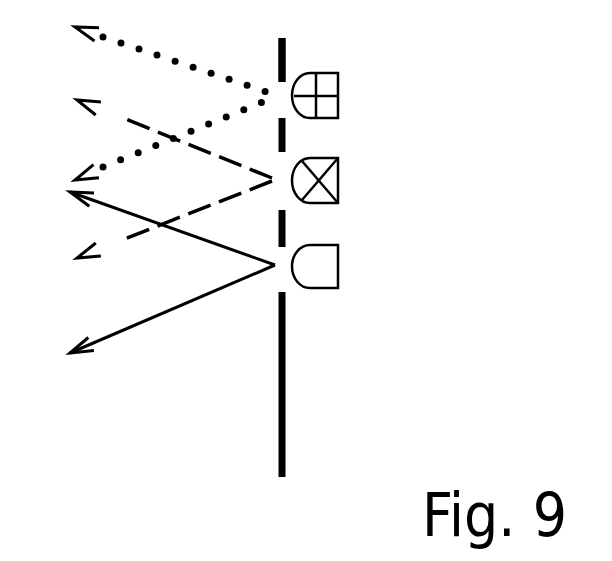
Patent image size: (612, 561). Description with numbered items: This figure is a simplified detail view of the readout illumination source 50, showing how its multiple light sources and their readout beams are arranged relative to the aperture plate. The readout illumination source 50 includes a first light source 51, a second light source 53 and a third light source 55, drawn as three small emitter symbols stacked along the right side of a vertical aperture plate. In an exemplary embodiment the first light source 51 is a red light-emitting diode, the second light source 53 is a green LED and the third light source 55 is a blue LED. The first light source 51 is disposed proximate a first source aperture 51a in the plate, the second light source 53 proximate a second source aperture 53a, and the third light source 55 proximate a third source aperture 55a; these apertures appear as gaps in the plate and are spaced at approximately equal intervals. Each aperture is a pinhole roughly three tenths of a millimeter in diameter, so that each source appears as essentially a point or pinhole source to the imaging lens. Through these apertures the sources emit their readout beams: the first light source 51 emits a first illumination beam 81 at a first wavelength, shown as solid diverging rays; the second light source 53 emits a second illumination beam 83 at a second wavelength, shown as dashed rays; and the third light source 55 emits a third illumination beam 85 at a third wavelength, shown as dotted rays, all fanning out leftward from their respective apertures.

The readout illumination source 50 is at (115, 410).
The first light source 51 is at (338, 265).
The first source aperture 51a is at (284, 283).
The second light source 53 is at (338, 175).
The second source aperture 53a is at (282, 165).
The third light source 55 is at (338, 97).
The third source aperture 55a is at (283, 80).
The first illumination beam 81 is at (192, 303).
The second illumination beam 83 is at (137, 118).
The third illumination beam 85 is at (122, 45).